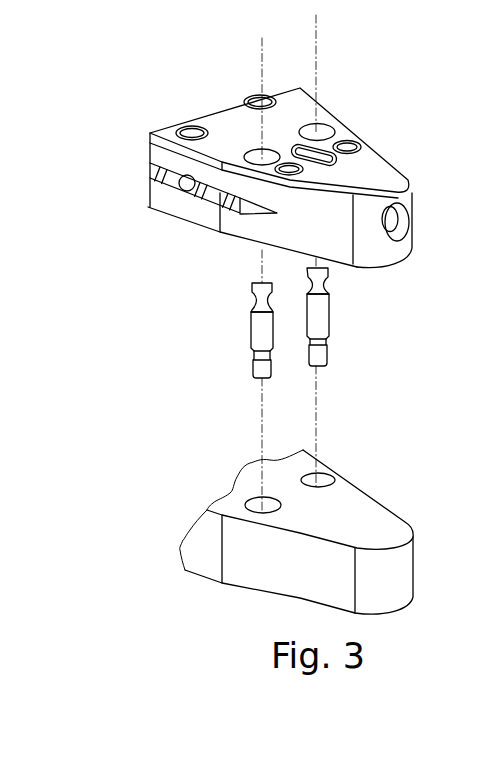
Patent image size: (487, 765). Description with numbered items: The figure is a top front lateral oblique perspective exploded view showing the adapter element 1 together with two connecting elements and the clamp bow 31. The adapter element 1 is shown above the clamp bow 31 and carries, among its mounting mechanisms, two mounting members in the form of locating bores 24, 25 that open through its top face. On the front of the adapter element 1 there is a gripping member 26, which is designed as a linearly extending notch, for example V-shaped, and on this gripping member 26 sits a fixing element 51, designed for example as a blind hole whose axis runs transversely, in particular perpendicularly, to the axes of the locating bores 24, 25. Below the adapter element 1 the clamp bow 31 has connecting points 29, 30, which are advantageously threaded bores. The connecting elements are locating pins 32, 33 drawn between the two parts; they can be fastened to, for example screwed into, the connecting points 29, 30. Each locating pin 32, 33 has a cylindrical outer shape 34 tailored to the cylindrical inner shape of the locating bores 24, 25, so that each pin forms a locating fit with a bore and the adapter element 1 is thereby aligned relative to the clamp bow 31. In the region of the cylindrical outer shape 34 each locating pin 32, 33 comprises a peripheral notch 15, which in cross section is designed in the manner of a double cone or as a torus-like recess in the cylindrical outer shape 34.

The adapter element 1 is at (426, 187).
The locating bore 24 is at (252, 149).
The locating bore 25 is at (333, 126).
The gripping member 26 is at (182, 194).
The fixing element 51 is at (176, 194).
The peripheral notch 15 is at (247, 302).
The locating pin 32 is at (250, 323).
The locating pin 33 is at (333, 304).
The cylindrical outer shape 34 is at (245, 347).
The connecting point 29 is at (333, 474).
The connecting point 30 is at (245, 500).
The clamp bow 31 is at (262, 580).